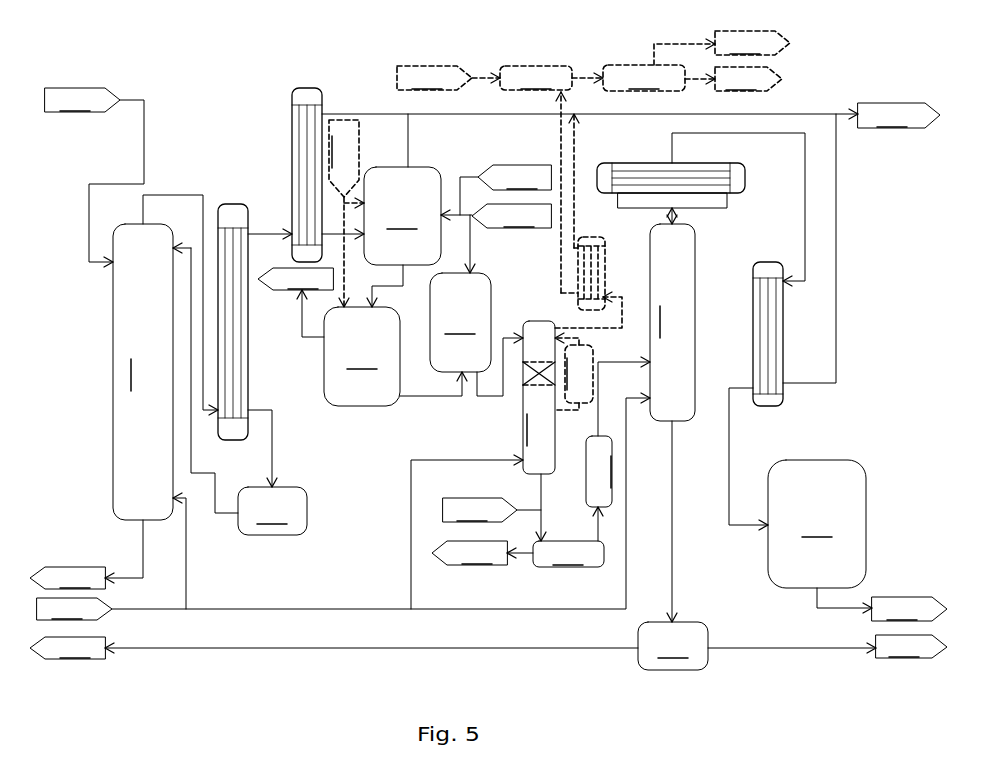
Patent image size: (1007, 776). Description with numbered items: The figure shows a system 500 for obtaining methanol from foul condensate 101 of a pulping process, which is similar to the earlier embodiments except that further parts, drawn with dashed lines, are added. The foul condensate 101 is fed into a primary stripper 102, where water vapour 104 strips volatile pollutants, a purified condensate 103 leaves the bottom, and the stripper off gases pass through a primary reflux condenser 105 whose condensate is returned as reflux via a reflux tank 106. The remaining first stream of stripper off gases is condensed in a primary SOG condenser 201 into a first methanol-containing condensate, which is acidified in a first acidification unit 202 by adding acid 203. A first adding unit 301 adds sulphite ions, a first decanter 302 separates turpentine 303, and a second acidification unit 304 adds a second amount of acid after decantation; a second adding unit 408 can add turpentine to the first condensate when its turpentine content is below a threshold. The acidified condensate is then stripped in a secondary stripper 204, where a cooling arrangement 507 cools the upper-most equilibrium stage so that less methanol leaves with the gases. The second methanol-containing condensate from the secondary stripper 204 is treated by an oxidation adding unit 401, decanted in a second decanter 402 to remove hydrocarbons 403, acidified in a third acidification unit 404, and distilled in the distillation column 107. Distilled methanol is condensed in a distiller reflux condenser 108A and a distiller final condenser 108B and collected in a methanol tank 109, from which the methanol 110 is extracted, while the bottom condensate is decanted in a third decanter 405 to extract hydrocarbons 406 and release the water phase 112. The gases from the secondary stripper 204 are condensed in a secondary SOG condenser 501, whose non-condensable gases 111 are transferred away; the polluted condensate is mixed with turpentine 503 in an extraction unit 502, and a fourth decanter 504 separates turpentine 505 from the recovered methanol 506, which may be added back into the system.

The system 500 is at (110, 62).
The foul condensate 101 is at (94, 175).
The primary stripper 102 is at (175, 357).
The purified condensate 103 is at (86, 555).
The water vapour 104 is at (343, 509).
The primary reflux condenser 105 is at (232, 204).
The reflux tank 106 is at (272, 511).
The distillation column 107 is at (672, 423).
The distiller reflux condenser 108A is at (747, 187).
The distiller final condenser 108B is at (783, 345).
The methanol tank 109 is at (817, 524).
The methanol 110 is at (882, 605).
The non-condensable gases 111 is at (631, 243).
The water phase 112 is at (334, 648).
The primary SOG condenser 201 is at (304, 85).
The first acidification unit 202 is at (402, 237).
The acid 203 is at (496, 238).
The secondary stripper 204 is at (572, 419).
The first adding unit 301 is at (505, 190).
The first decanter 302 is at (393, 356).
The turpentine 303 is at (295, 302).
The second acidification unit 304 is at (476, 334).
The oxidation adding unit 401 is at (492, 510).
The second decanter 402 is at (568, 537).
The hydrocarbons 403 is at (482, 553).
The third acidification unit 404 is at (618, 434).
The third decanter 405 is at (673, 646).
The hydrocarbons 406 is at (827, 647).
The second adding unit 408 is at (346, 213).
The secondary SOG condenser 501 is at (603, 246).
The extraction unit 502 is at (551, 179).
The turpentine 503 is at (448, 78).
The fourth decanter 504 is at (659, 67).
The turpentine 505 is at (748, 79).
The methanol 506 is at (752, 43).
The cooling arrangement 507 is at (574, 374).